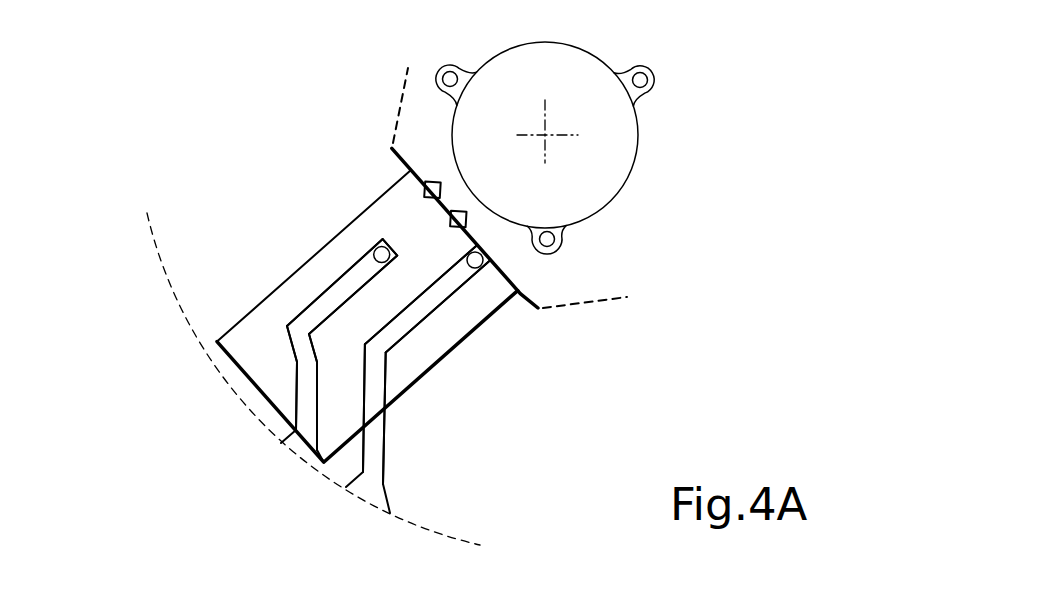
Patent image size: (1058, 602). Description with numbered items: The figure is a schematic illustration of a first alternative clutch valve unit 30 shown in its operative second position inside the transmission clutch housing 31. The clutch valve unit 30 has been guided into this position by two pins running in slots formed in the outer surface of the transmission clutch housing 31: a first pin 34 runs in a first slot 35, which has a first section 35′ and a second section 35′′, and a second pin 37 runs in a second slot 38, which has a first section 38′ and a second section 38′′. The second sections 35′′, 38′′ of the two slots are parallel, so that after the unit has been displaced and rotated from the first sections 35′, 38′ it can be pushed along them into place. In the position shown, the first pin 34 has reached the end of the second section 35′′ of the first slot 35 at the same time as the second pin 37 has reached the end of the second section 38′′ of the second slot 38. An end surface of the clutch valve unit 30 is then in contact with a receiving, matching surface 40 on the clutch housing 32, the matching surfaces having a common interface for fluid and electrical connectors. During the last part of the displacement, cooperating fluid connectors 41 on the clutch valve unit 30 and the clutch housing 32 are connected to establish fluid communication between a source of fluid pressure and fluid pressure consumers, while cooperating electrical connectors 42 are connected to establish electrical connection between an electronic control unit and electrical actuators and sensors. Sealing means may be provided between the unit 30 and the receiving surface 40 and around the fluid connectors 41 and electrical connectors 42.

The clutch valve unit 30 is at (340, 430).
The transmission clutch housing 31 is at (170, 288).
The clutch housing 32 is at (690, 91).
The first pin 34 is at (478, 273).
The first slot 35 is at (437, 387).
The first section of the first slot 35′ is at (370, 448).
The second section of the first slot 35′′ is at (430, 300).
The second pin 37 is at (378, 246).
The second slot 38 is at (307, 410).
The first section of the second slot 38′ is at (283, 310).
The second section of the second slot 38′′ is at (345, 287).
The matching surface 40 is at (531, 306).
The fluid connectors 41 is at (444, 175).
The electrical connectors 42 is at (477, 208).